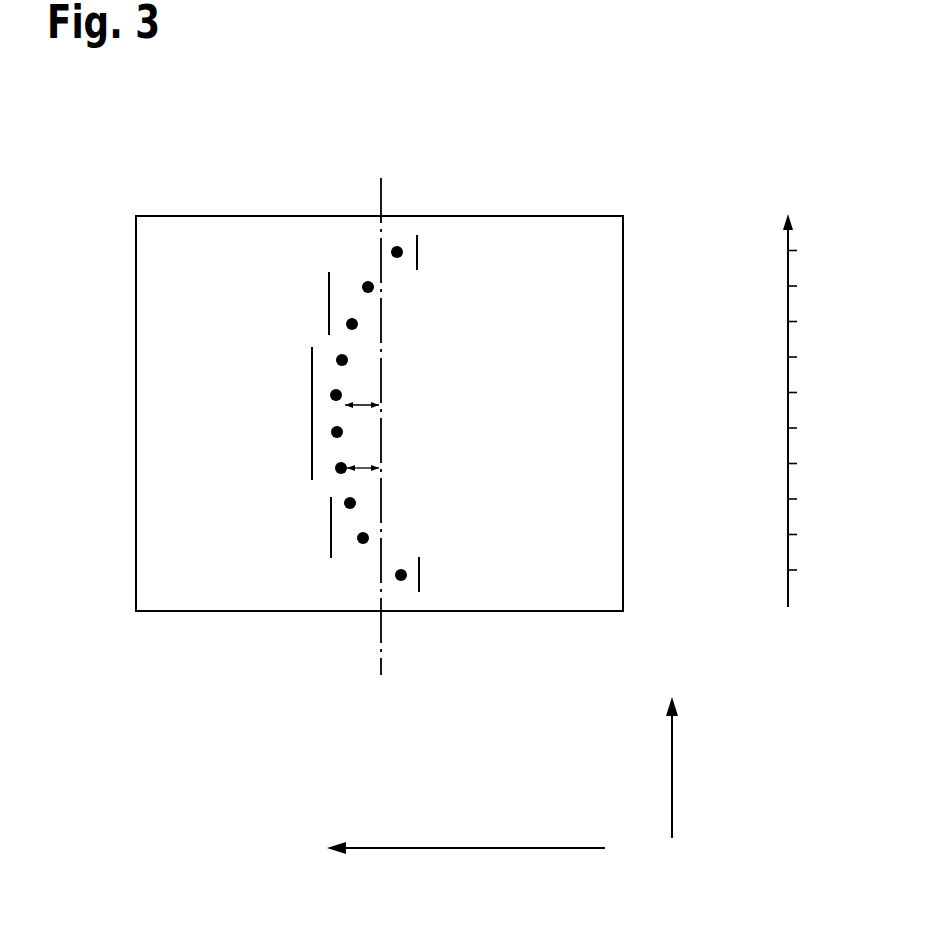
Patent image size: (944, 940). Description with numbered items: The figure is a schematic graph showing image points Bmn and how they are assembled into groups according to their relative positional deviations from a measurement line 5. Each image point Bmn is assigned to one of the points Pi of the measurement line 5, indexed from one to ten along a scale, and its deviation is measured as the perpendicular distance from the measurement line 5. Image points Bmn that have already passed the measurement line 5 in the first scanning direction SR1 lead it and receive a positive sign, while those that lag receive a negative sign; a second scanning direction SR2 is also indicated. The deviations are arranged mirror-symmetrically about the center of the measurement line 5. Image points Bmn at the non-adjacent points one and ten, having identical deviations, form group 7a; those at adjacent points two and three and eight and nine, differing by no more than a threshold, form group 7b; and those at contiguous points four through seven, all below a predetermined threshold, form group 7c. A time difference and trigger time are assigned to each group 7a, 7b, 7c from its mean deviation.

The measurement line 5 is at (382, 660).
The image points Bmn is at (364, 284).
The group of image points 7a is at (417, 248).
The group of image points 7b is at (329, 305).
The group of image points 7c is at (312, 458).
The first scanning direction SR1 is at (463, 850).
The second scanning direction SR2 is at (672, 776).
The points of the measurement line Pi is at (831, 410).